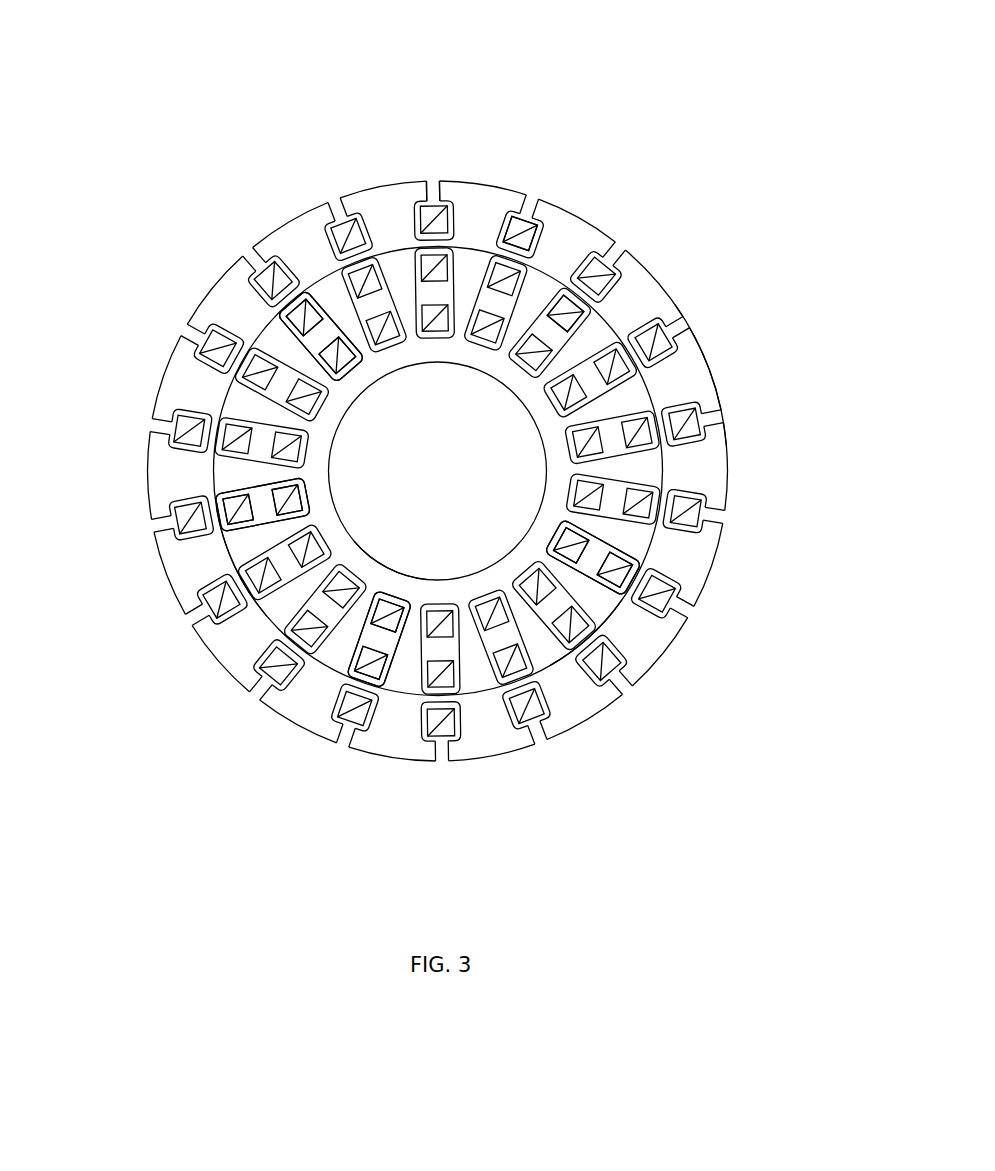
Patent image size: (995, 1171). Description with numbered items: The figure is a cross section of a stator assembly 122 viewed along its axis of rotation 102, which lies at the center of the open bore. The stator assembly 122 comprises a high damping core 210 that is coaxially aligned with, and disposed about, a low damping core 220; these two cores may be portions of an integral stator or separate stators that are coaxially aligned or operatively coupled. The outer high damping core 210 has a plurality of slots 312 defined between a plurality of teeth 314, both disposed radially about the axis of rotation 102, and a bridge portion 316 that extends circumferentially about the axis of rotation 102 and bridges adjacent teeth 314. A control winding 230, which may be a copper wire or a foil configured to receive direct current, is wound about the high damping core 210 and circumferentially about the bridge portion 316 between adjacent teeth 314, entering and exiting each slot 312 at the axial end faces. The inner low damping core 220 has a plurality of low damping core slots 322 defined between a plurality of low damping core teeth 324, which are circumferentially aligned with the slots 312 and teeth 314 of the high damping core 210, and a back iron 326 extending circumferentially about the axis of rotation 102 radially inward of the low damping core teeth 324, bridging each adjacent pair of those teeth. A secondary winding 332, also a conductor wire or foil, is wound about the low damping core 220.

The axis of rotation 102 is at (438, 472).
The stator assembly 122 is at (202, 67).
The high damping core 210 is at (364, 173).
The low damping core 220 is at (462, 563).
The control winding 230 is at (530, 233).
The slots 312 is at (437, 198).
The teeth 314 is at (677, 382).
The bridge portion 316 is at (590, 640).
The low damping core slots 322 is at (283, 488).
The low damping core teeth 324 is at (282, 531).
The back iron 326 is at (378, 582).
The secondary winding 332 is at (333, 357).